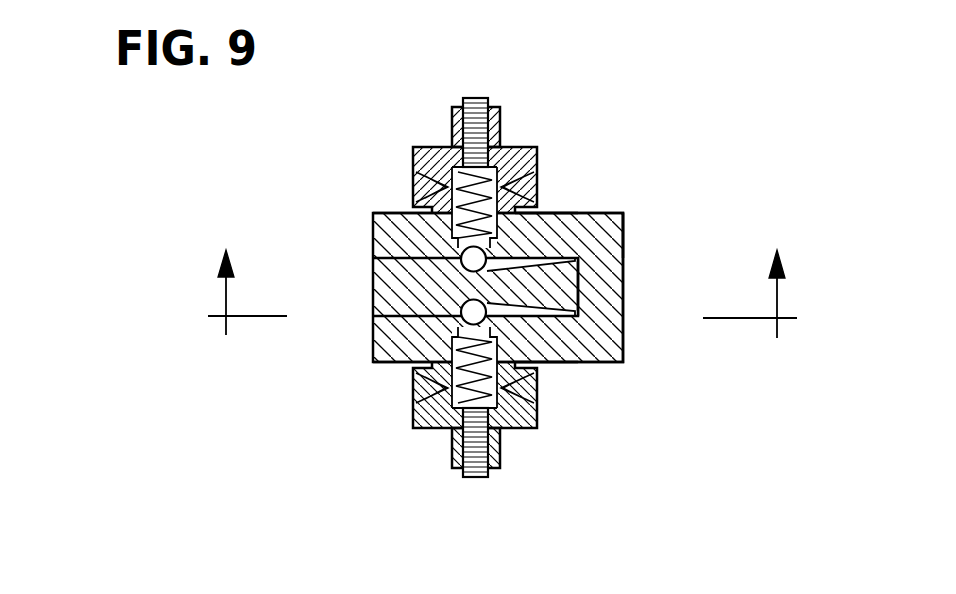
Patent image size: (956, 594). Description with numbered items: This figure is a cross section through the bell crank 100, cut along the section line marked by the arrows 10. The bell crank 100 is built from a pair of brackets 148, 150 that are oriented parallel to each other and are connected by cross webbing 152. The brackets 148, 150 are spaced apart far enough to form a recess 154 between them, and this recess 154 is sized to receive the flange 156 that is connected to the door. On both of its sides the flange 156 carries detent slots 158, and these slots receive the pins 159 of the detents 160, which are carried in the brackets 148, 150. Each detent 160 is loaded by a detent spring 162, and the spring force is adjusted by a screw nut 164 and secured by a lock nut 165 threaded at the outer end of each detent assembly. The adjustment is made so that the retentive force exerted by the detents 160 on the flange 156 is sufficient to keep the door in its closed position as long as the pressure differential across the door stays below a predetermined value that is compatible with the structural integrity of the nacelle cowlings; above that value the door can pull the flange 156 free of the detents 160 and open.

The section line arrows 10 is at (502, 278).
The bell crank 100 is at (603, 208).
The bracket 148 is at (575, 342).
The bracket 150 is at (572, 223).
The cross webbing 152 is at (610, 296).
The recess 154 is at (623, 233).
The flange 156 is at (382, 302).
The detent slot 158 is at (455, 275).
The pin 159 is at (540, 215).
The detent 160 is at (517, 147).
The detent spring 162 is at (440, 185).
The screw nut 164 is at (473, 98).
The lock nut 165 is at (492, 110).